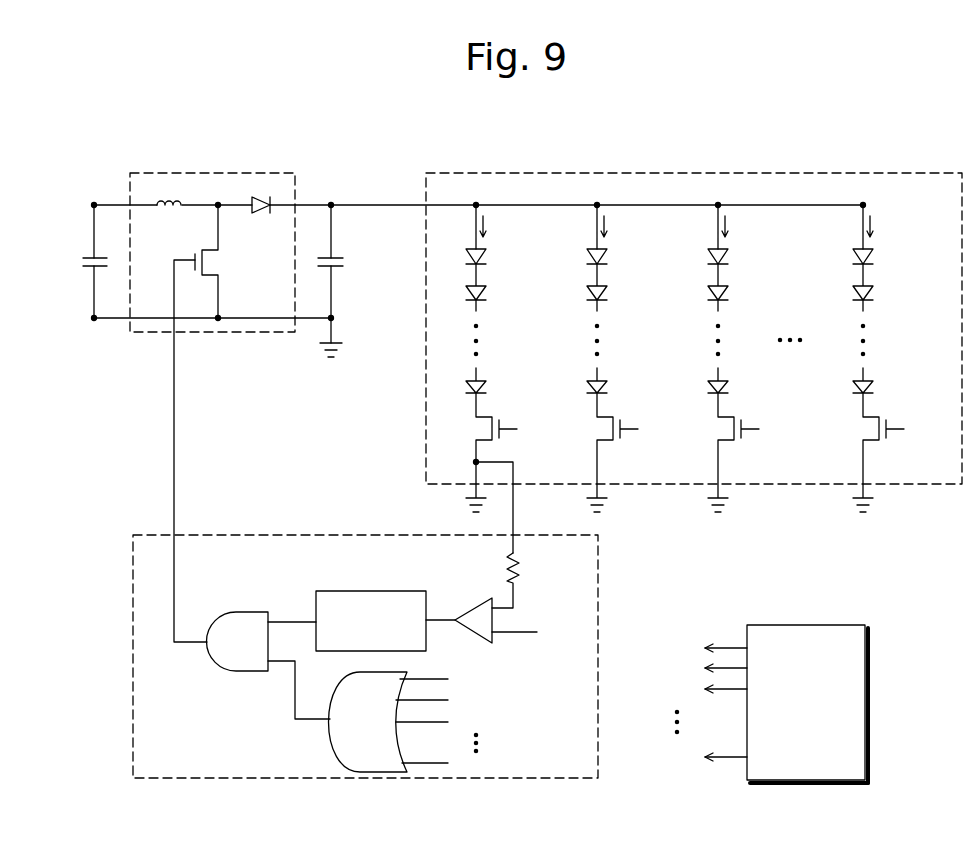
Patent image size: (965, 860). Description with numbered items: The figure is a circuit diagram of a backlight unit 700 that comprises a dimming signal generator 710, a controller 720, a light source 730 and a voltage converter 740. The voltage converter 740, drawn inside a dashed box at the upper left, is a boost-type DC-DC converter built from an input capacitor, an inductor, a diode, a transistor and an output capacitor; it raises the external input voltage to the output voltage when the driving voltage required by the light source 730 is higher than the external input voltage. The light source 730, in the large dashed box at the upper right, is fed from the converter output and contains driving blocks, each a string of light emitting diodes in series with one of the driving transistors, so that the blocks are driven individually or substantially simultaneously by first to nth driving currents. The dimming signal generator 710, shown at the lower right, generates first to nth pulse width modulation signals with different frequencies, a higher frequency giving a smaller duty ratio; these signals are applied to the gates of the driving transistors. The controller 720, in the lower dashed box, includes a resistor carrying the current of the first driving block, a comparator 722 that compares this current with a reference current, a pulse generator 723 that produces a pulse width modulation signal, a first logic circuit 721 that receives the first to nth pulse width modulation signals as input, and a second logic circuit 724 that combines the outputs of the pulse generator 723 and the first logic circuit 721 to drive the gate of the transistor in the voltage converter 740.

The backlight unit 700 is at (838, 117).
The dimming signal generator 710 is at (823, 625).
The controller 720 is at (255, 536).
The first logic circuit 721 is at (337, 752).
The comparator 722 is at (470, 604).
The pulse generator 723 is at (380, 591).
The second logic circuit 724 is at (240, 612).
The light source 730 is at (905, 173).
The voltage converter 740 is at (237, 173).